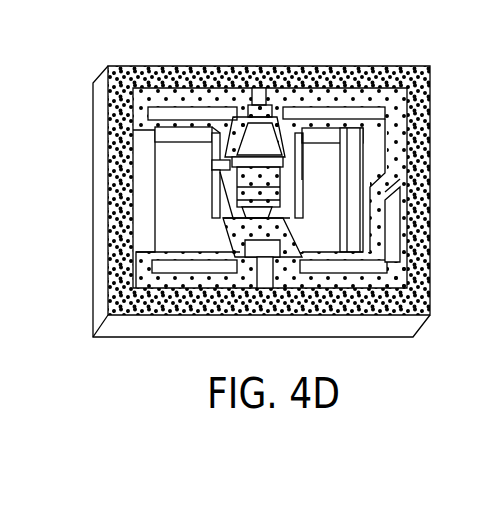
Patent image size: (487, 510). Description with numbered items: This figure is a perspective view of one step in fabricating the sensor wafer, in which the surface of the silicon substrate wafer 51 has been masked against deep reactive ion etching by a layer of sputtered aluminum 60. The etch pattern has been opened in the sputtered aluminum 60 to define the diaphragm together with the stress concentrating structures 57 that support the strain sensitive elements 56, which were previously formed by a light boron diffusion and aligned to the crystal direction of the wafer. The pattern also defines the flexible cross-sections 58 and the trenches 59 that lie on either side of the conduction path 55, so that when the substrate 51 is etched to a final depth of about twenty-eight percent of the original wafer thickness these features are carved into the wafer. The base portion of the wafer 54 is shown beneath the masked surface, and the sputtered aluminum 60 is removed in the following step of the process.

The silicon substrate wafer 51 is at (155, 65).
The base 54 is at (128, 327).
The conduction path 55 is at (236, 98).
The strain sensitive elements 56 is at (222, 160).
The stress concentrating structures 57 is at (216, 177).
The flexible cross-sections 58 is at (295, 212).
The trenches 59 is at (162, 183).
The sputtered aluminum 60 is at (392, 65).